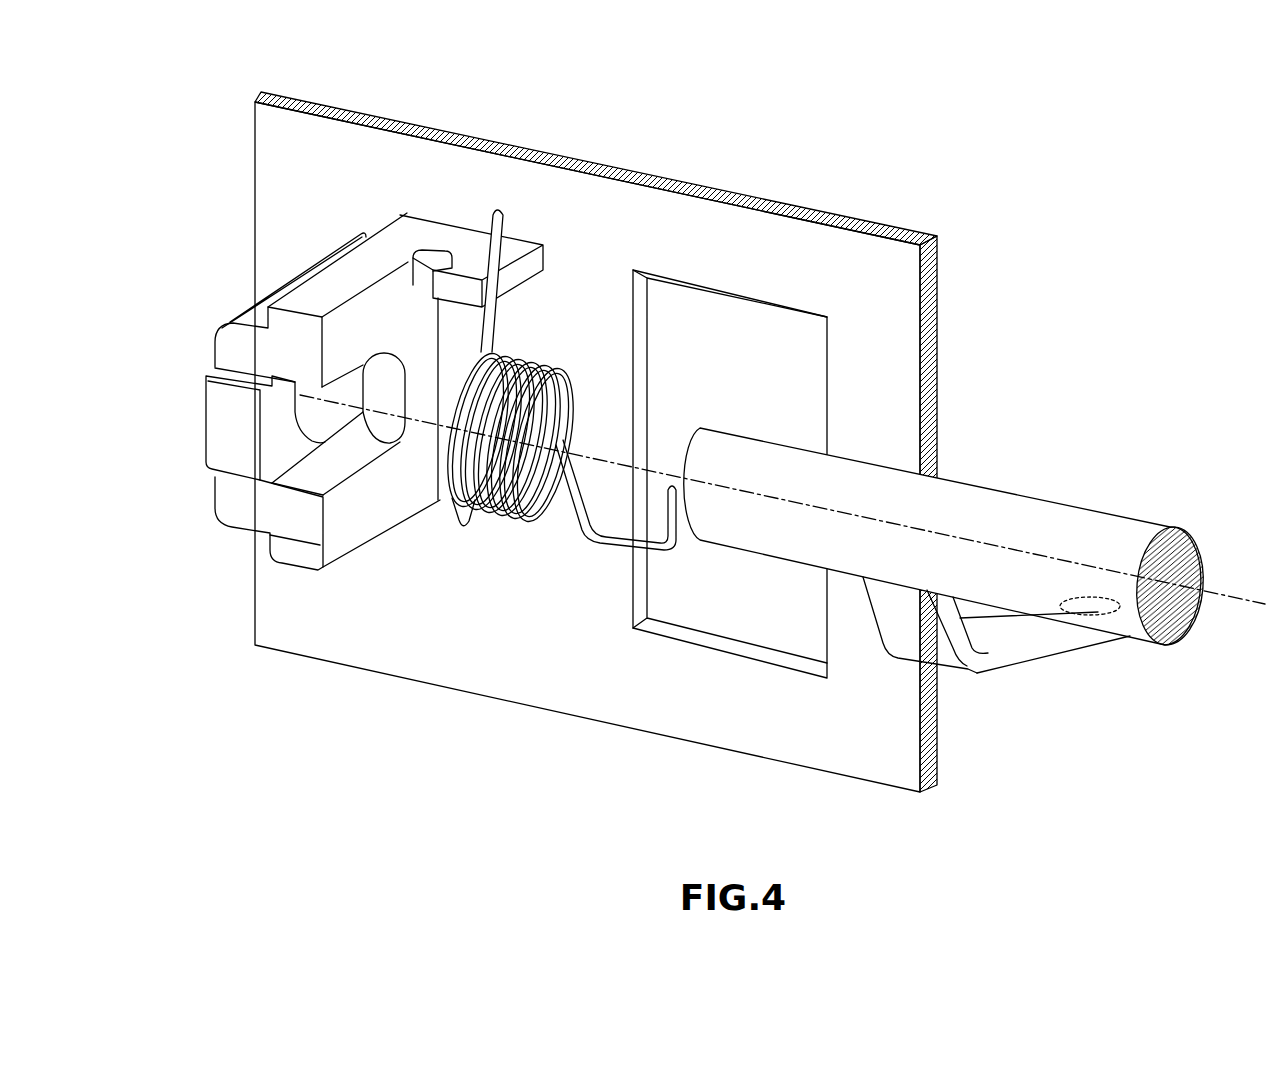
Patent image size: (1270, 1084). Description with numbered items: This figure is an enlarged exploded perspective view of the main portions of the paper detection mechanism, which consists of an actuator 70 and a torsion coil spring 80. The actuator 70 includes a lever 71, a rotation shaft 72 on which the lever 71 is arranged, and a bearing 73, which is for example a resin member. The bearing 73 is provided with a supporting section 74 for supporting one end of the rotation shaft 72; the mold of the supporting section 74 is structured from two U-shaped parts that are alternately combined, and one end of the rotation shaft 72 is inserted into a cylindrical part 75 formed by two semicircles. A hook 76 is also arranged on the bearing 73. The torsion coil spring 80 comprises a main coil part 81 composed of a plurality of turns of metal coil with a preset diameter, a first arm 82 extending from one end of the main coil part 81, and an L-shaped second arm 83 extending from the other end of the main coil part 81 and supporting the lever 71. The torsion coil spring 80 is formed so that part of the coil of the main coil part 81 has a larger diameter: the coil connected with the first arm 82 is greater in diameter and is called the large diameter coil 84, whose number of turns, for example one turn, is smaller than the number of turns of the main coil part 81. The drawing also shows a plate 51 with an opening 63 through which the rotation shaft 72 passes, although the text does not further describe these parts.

The plate 51 is at (880, 309).
The opening 63 is at (648, 320).
The actuator 70 is at (946, 549).
The lever 71 is at (1023, 660).
The rotation shaft 72 is at (870, 477).
The bearing 73 is at (342, 383).
The supporting section 74 is at (338, 467).
The cylindrical part 75 is at (323, 428).
The hook 76 is at (473, 253).
The torsion coil spring 80 is at (556, 400).
The main coil part 81 is at (530, 357).
The first arm 82 is at (505, 218).
The second arm 83 is at (604, 543).
The large diameter coil 84 is at (463, 517).